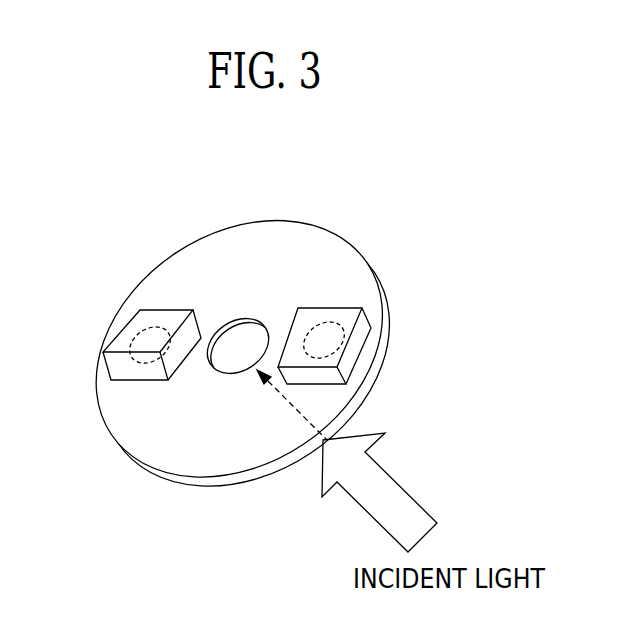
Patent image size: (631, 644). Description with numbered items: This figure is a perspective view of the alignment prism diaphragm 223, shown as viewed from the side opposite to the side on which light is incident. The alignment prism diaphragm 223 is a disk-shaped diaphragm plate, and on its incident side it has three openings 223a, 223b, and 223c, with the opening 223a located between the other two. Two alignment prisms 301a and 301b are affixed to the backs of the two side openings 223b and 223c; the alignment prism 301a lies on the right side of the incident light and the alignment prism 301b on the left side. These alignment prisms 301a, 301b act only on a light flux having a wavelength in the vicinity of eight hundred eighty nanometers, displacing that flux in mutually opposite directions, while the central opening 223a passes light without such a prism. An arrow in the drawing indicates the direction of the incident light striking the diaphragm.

The alignment prism diaphragm 223 is at (348, 256).
The opening 223a is at (248, 333).
The opening 223b is at (148, 342).
The opening 223c is at (325, 333).
The alignment prism 301a is at (113, 368).
The alignment prism 301b is at (362, 337).